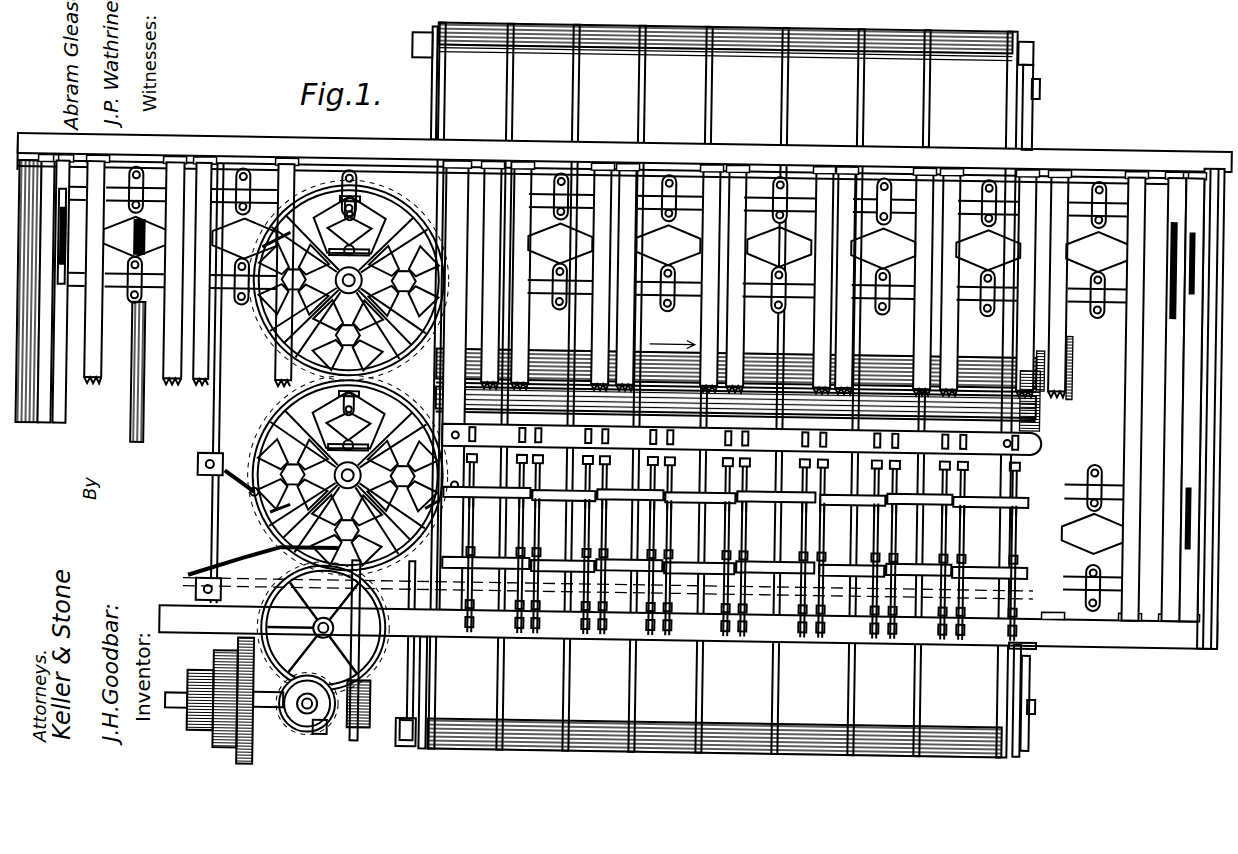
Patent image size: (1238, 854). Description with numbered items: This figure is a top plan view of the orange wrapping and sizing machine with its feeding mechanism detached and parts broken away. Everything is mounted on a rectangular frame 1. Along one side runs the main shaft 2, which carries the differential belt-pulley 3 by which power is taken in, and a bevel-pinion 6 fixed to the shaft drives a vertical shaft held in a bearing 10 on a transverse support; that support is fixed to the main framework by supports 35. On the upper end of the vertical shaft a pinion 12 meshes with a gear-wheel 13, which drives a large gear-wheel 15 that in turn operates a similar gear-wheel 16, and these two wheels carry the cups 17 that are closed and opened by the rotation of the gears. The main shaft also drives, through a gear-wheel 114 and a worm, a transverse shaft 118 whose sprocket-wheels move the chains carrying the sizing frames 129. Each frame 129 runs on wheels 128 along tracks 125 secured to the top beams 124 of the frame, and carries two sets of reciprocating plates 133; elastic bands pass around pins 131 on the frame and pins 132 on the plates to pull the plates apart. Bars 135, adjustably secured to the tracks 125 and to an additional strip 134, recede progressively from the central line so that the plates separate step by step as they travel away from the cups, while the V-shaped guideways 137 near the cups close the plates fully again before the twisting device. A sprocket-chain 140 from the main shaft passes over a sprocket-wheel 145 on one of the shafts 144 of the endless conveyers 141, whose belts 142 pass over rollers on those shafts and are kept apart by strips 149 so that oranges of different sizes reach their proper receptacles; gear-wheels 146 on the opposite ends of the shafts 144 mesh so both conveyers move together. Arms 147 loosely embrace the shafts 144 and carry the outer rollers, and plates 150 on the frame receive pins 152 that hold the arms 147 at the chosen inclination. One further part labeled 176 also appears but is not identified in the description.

The rectangular frame 1 is at (1083, 158).
The main shaft 2 is at (405, 728).
The differential belt-pulley 3 is at (215, 660).
The bevel-pinion 6 is at (322, 728).
The bearing 10 is at (303, 637).
The pinion 12 is at (305, 715).
The gear-wheel 13 is at (313, 627).
The large gear-wheel 15 is at (258, 462).
The gear-wheel 16 is at (285, 322).
The cups 17 is at (262, 247).
The supports 35 is at (352, 148).
The gear-wheel 114 is at (340, 628).
The transverse shaft 118 is at (145, 420).
The top beams 124 is at (762, 148).
The tracks 125 is at (1153, 643).
The wheels 128 is at (619, 385).
The frames 129 is at (190, 163).
The pins 131 is at (878, 180).
The pins 132 is at (878, 221).
The reciprocating plates 133 is at (978, 255).
The strip 134 is at (741, 470).
The bars 135 is at (734, 561).
The V-shaped guideways 137 is at (278, 556).
The sprocket-chain 140 is at (330, 715).
The endless conveyers 141 is at (719, 390).
The belts 142 is at (717, 383).
The shafts 144 is at (1075, 371).
The sprocket-wheel 145 is at (362, 722).
The gear-wheels 146 is at (1073, 352).
The arms 147 is at (425, 72).
The strips 149 is at (915, 668).
The plates 150 is at (884, 182).
The pins 152 is at (1040, 88).
The link pivot 176 is at (258, 492).